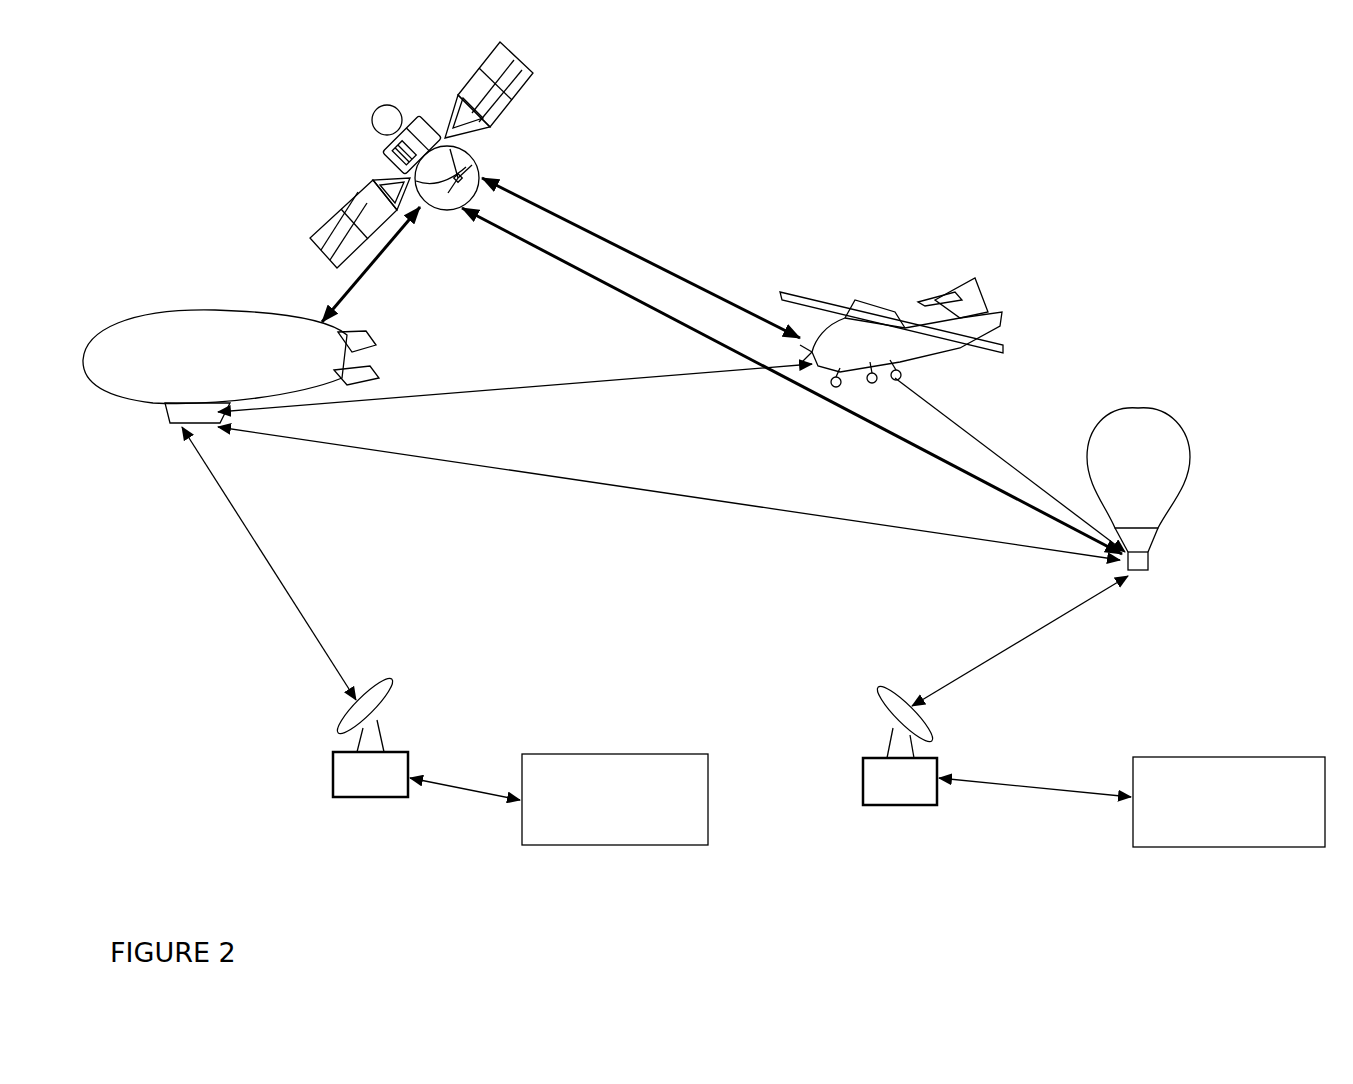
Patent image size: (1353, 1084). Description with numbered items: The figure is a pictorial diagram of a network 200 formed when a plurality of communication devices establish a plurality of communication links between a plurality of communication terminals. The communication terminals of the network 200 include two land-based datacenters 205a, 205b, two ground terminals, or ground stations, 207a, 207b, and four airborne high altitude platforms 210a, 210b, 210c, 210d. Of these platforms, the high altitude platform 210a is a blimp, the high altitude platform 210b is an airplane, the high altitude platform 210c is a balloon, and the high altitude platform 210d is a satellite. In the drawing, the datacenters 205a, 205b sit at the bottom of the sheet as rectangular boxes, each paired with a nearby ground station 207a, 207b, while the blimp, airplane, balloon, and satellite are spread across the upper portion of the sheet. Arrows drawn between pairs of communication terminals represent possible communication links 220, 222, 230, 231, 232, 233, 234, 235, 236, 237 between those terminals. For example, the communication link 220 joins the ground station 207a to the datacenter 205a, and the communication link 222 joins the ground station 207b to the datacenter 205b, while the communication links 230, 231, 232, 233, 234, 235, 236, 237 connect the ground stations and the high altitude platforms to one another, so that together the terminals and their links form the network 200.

The network 200 is at (189, 926).
The land-based datacenter 205a is at (615, 799).
The land-based datacenter 205b is at (1229, 802).
The ground station 207a is at (370, 735).
The ground station 207b is at (900, 743).
The high altitude platform (blimp) 210a is at (208, 325).
The high altitude platform (airplane) 210b is at (855, 308).
The high altitude platform (balloon) 210c is at (1150, 425).
The high altitude platform (satellite) 210d is at (372, 113).
The communication link 220 is at (465, 798).
The communication link 222 is at (1035, 801).
The communication link 230 is at (269, 563).
The communication link 231 is at (371, 264).
The communication link 232 is at (515, 391).
The communication link 233 is at (669, 493).
The communication link 234 is at (792, 381).
The communication link 235 is at (641, 258).
The communication link 236 is at (1010, 465).
The communication link 237 is at (1020, 641).